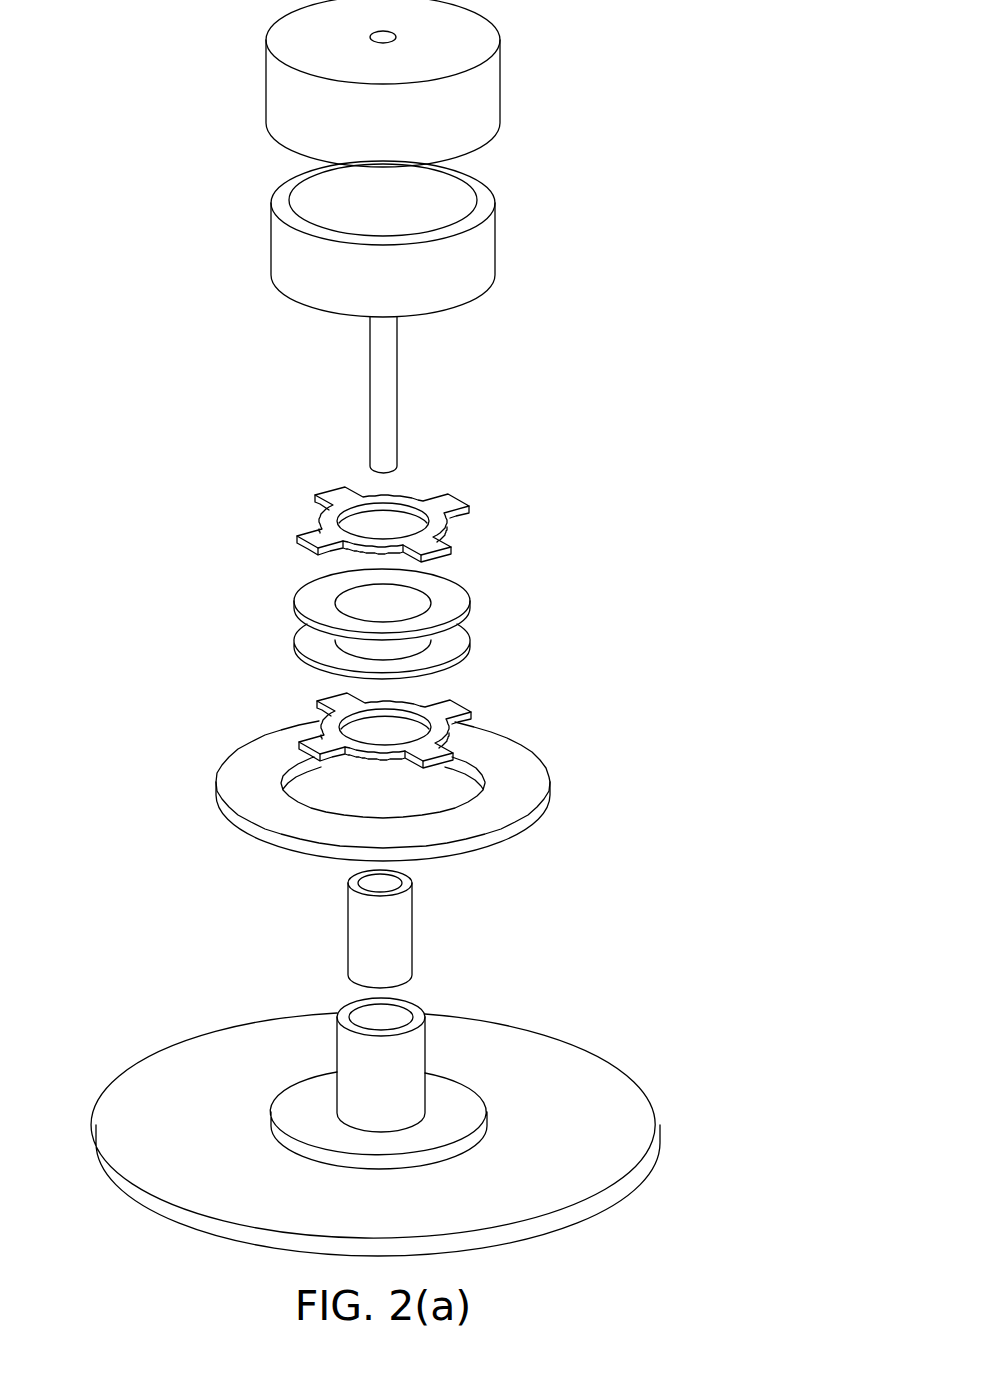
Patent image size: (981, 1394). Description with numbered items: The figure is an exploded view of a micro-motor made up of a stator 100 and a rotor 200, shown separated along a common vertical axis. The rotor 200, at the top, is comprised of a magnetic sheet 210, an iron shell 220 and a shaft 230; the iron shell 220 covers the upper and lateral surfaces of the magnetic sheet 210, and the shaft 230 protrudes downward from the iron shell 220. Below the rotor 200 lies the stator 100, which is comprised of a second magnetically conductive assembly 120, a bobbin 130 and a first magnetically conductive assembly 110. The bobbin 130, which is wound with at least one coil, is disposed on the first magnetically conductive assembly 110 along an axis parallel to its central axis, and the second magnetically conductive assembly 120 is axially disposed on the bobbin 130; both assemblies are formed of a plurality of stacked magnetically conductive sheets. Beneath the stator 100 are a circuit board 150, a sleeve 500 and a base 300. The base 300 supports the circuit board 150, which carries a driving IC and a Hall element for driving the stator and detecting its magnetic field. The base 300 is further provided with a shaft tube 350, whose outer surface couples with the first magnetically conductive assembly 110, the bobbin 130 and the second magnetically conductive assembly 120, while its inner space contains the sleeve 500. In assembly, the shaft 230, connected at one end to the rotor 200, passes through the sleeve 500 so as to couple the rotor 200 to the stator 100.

The rotor 200 is at (233, 0).
The iron shell 220 is at (477, 97).
The magnetic sheet 210 is at (477, 245).
The shaft 230 is at (390, 387).
The stator 100 is at (243, 485).
The second magnetically conductive assembly 120 is at (443, 502).
The bobbin 130 is at (448, 605).
The first magnetically conductive assembly 110 is at (445, 740).
The circuit board 150 is at (522, 778).
The sleeve 500 is at (360, 930).
The shaft tube 350 is at (358, 1060).
The base 300 is at (439, 1125).